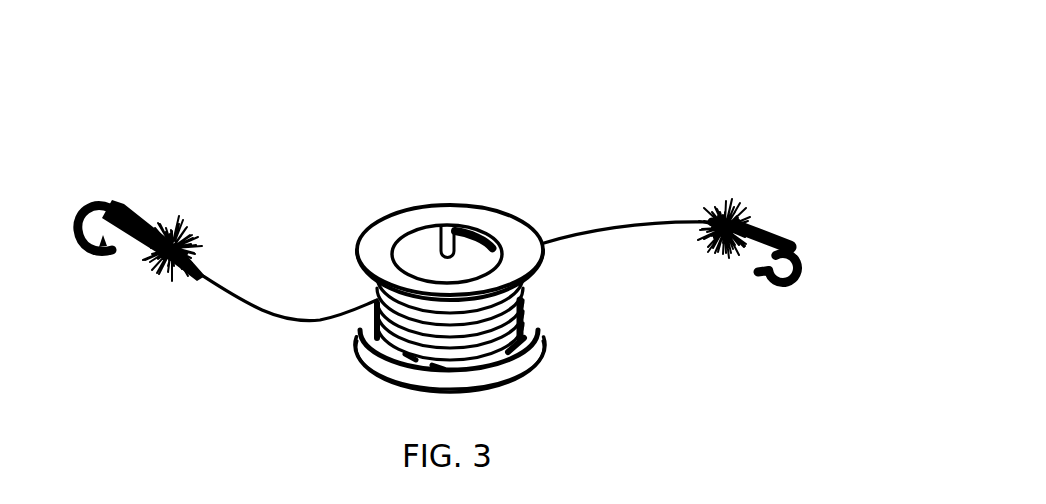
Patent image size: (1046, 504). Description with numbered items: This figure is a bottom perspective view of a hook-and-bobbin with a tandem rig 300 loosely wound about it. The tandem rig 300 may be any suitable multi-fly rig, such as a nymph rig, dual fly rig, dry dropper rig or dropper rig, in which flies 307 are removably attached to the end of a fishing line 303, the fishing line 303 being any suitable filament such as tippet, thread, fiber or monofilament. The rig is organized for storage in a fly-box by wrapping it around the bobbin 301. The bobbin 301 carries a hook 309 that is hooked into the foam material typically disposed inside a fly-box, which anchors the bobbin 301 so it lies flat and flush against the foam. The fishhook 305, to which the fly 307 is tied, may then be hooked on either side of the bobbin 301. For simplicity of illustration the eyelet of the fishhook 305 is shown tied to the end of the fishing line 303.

The tandem rig 300 is at (507, 210).
The bobbin 301 is at (376, 218).
The fishing line 303 is at (627, 223).
The fishhook 305 is at (791, 289).
The fly 307 is at (758, 184).
The hook 309 is at (452, 227).